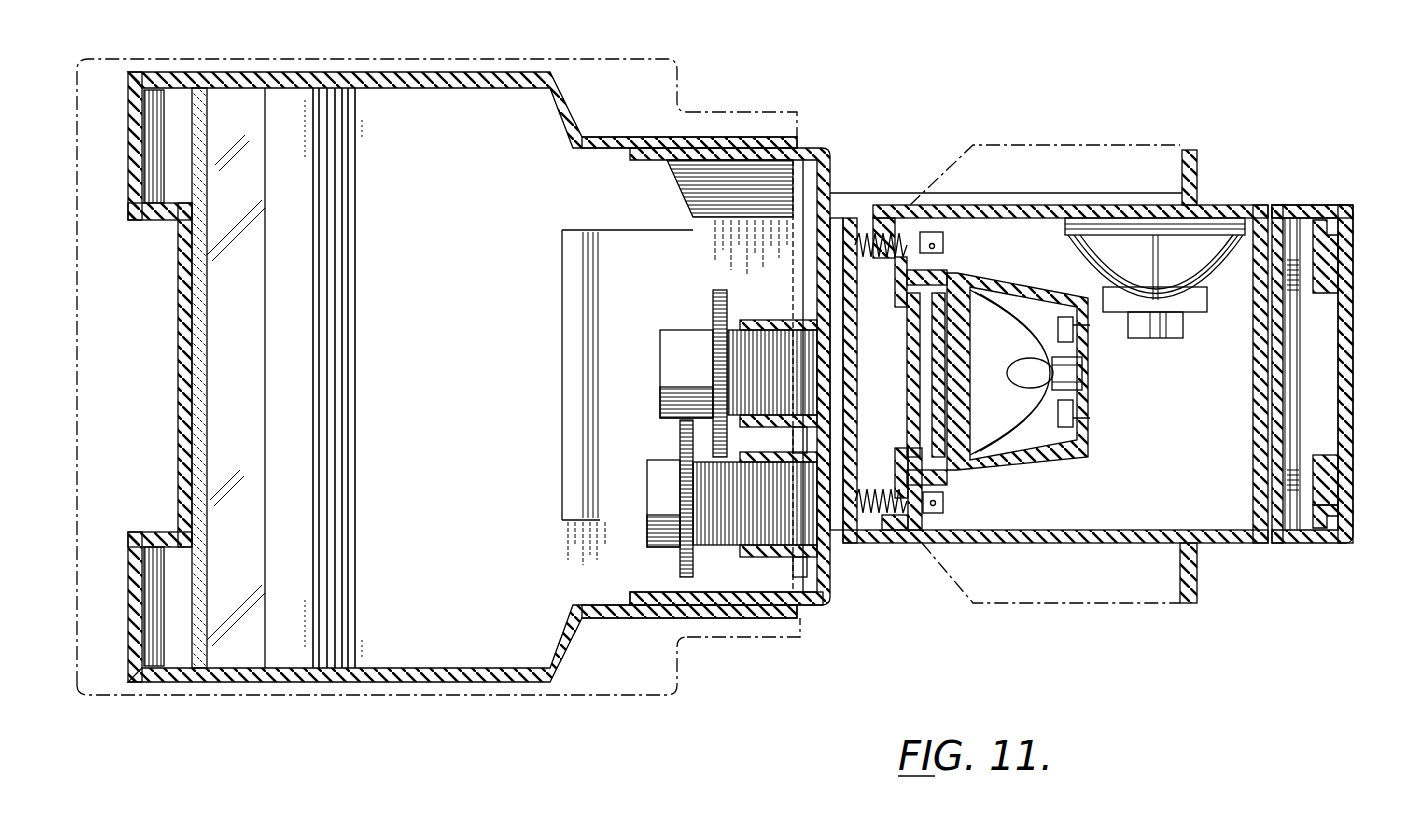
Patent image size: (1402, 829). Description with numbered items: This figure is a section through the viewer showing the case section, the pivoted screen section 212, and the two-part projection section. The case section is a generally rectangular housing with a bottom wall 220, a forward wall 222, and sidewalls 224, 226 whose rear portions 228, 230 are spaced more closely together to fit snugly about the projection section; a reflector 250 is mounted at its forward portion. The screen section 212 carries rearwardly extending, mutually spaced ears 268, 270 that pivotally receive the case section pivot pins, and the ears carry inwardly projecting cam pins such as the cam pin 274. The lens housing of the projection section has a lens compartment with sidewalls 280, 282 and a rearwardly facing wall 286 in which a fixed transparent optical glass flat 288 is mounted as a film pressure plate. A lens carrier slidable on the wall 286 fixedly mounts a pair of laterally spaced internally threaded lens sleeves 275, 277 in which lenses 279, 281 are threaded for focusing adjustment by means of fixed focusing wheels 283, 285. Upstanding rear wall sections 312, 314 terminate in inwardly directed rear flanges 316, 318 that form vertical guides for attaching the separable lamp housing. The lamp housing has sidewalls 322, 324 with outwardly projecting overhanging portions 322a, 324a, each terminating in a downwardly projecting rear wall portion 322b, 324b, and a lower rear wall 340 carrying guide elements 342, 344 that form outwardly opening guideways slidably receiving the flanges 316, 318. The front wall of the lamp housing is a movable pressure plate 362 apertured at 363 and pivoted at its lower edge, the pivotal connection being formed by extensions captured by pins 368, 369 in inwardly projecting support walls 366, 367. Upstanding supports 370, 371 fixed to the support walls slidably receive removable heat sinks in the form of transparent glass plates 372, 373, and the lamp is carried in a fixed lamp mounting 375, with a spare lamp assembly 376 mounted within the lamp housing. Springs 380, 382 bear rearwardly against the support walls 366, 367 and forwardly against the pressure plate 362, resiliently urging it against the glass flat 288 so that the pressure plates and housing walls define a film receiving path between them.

The screen section 212 is at (430, 39).
The bottom wall 220 is at (500, 478).
The forward wall 222 is at (458, 382).
The sidewall 224 is at (386, 72).
The sidewall 226 is at (356, 684).
The rear portion 228 is at (670, 618).
The rear portion 230 is at (668, 137).
The reflector 250 is at (265, 437).
The ear 268 is at (740, 641).
The ear 270 is at (762, 112).
The cam pin 274 is at (1026, 392).
The lens sleeve 275 is at (765, 322).
The lens sleeve 277 is at (762, 557).
The lens 279 is at (677, 331).
The sidewall 280 is at (655, 594).
The lens 281 is at (665, 462).
The sidewall 282 is at (667, 161).
The focusing wheel 283 is at (713, 300).
The focusing wheel 285 is at (680, 560).
The rearwardly facing wall 286 is at (761, 376).
The optical glass flat 288 is at (800, 303).
The rear wall section 312 is at (1337, 374).
The rear wall section 314 is at (1303, 206).
The rear flange 316 is at (1330, 505).
The rear flange 318 is at (1340, 243).
The sidewall 322 is at (1050, 543).
The overhanging portion 322a is at (1086, 604).
The rear wall portion 322b is at (1198, 583).
The sidewall 324 is at (1135, 257).
The overhanging portion 324a is at (1130, 145).
The rear wall portion 324b is at (1198, 185).
The lower rear wall 340 is at (1352, 348).
The guide element 342 is at (1330, 520).
The guide element 344 is at (1320, 222).
The pressure plate 362 is at (842, 268).
The aperture 363 is at (850, 335).
The support wall 366 is at (912, 522).
The support wall 367 is at (968, 216).
The pin 368 is at (945, 503).
The pin 369 is at (944, 243).
The upstanding support 370 is at (958, 478).
The upstanding support 371 is at (955, 290).
The glass plate 372 is at (918, 360).
The glass plate 373 is at (942, 338).
The lamp mounting 375 is at (1060, 450).
The spare lamp assembly 376 is at (1103, 290).
The spring 380 is at (905, 215).
The spring 382 is at (868, 515).